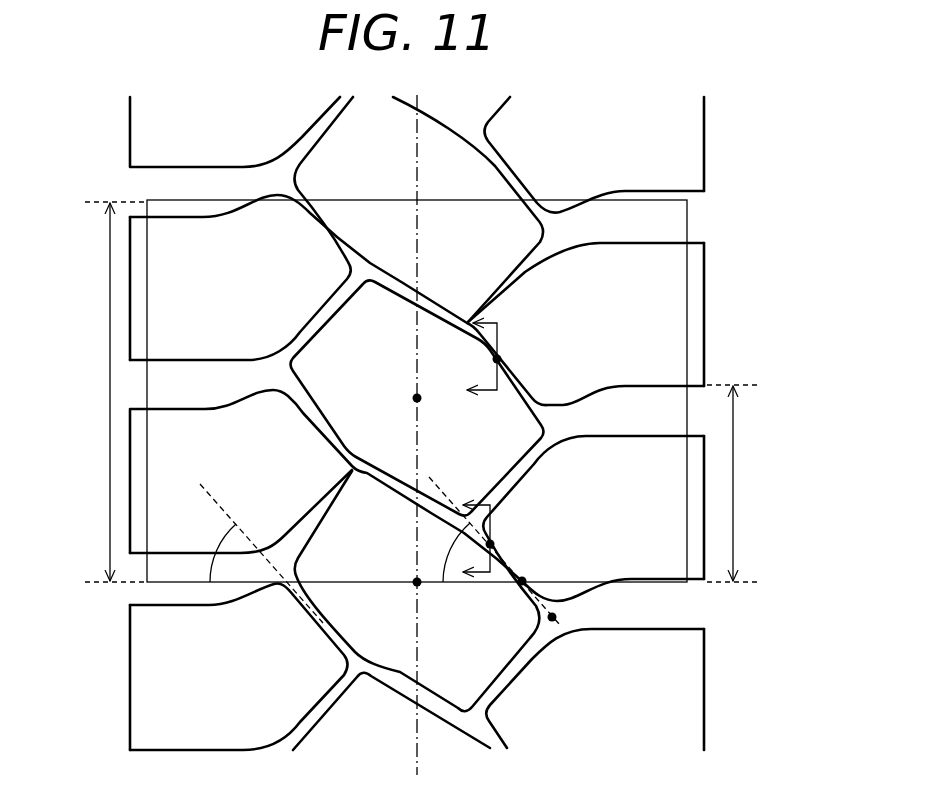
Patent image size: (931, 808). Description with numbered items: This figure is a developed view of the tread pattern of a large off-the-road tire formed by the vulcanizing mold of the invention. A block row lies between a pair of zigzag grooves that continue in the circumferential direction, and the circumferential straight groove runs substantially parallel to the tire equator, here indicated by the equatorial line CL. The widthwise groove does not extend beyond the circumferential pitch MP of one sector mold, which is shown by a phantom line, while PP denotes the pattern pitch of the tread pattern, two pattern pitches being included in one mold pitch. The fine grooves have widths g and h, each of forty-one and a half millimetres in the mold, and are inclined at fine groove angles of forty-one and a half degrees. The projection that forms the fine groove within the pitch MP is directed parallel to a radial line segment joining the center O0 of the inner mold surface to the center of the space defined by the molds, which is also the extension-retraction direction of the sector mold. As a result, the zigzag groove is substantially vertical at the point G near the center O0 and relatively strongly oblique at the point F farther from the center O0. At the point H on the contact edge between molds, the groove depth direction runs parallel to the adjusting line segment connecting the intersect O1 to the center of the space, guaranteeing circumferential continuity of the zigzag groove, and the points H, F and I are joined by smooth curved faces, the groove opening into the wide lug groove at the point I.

The tire equatorial center line CL is at (417, 178).
The fine groove width h is at (373, 320).
The fine groove width g is at (343, 583).
The point G is at (499, 357).
The center of the inner surface of the mold O0 is at (419, 397).
The intersect O1 is at (419, 584).
The point F is at (492, 543).
The point H is at (524, 580).
The point I is at (554, 617).
The circumferential pitch of the sector mold MP is at (108, 392).
The pattern pitch PP is at (737, 483).